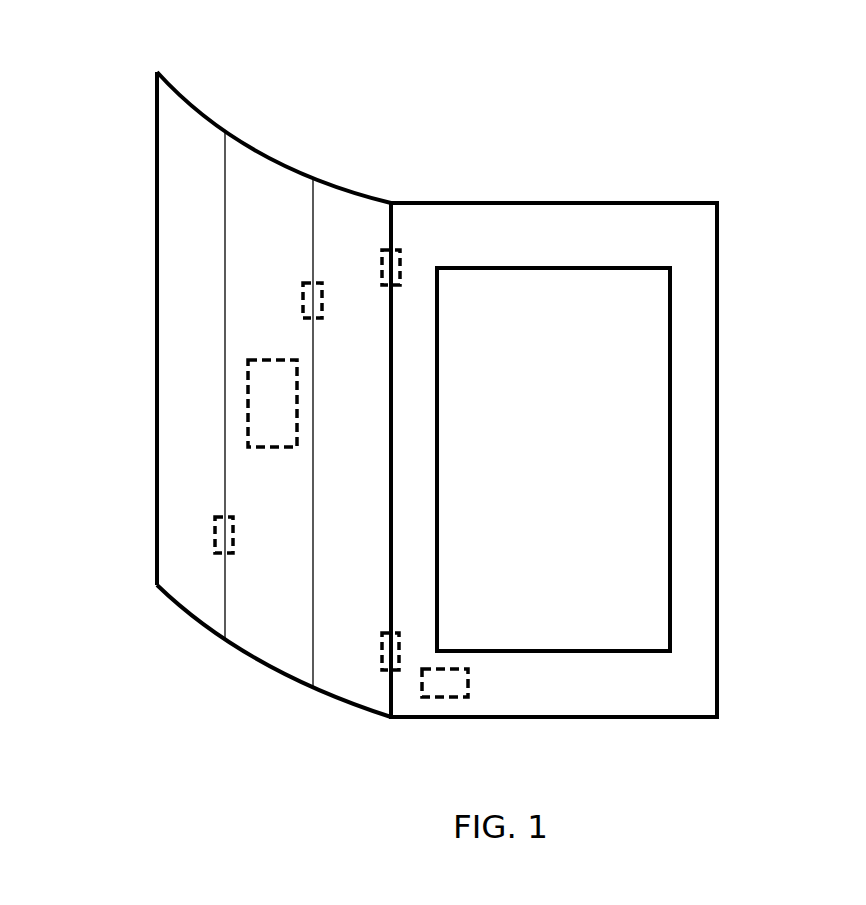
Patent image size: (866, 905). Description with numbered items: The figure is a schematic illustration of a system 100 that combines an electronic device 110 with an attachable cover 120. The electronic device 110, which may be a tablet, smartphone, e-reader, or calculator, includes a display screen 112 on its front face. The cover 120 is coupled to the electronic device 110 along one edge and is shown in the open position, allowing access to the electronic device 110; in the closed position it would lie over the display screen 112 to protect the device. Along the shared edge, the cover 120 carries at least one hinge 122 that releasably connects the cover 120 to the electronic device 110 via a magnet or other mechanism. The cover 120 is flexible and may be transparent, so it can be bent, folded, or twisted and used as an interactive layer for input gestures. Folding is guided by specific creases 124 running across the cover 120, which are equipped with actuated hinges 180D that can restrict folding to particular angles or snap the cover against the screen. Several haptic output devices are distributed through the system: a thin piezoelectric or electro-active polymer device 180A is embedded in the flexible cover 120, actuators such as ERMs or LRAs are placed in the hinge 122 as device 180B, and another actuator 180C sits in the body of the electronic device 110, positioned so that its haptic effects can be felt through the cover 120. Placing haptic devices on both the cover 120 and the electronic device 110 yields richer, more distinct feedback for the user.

The system 100 is at (457, 78).
The electronic device 110 is at (718, 262).
The display screen 112 is at (571, 474).
The cover 120 is at (157, 224).
The hinge 122 is at (383, 248).
The creases 124 is at (225, 440).
The haptic output device 180A is at (248, 393).
The haptic output device 180B is at (398, 250).
The haptic output device 180C is at (437, 698).
The actuated hinges 180D is at (306, 283).